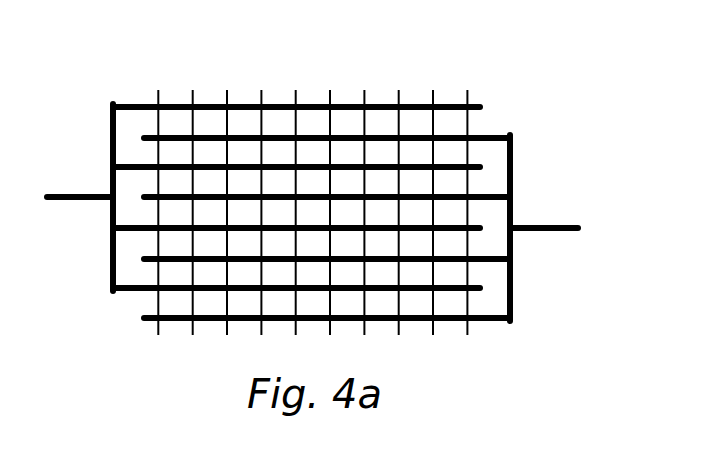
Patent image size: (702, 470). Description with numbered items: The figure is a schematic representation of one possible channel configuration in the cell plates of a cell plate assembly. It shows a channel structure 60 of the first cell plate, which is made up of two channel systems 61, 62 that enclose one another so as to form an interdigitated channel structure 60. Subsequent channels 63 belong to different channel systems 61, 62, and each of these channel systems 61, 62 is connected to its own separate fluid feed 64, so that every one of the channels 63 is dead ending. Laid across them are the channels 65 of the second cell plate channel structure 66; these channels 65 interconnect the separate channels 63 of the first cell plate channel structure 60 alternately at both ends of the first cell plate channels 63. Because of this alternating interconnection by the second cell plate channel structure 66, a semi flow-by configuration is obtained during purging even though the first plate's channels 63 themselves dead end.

The first cell plate channel structure 60 is at (512, 131).
The channel system 61 is at (514, 283).
The channel system 62 is at (113, 254).
The channels 63 is at (240, 165).
The fluid feeds 64 is at (68, 193).
The channels of the second cell plate channel structure 65 is at (330, 103).
The second cell plate channel structure 66 is at (156, 340).